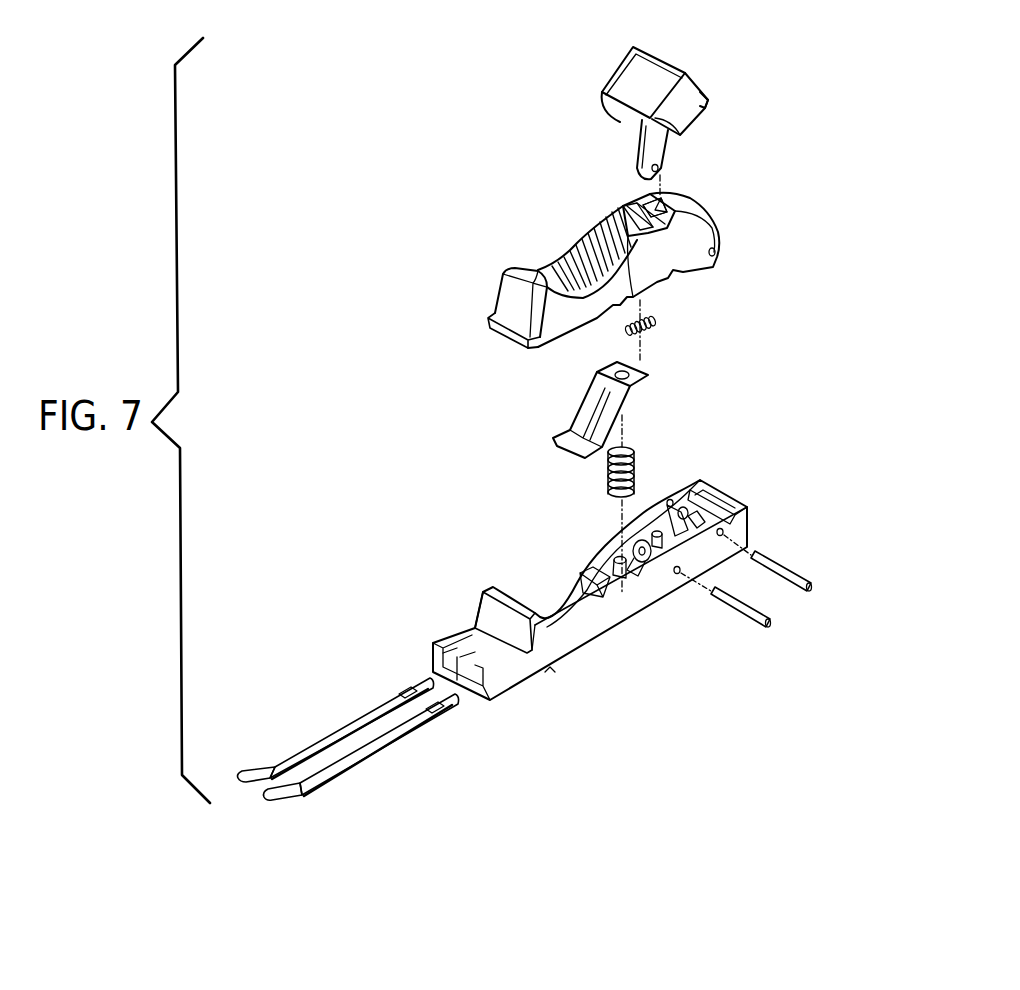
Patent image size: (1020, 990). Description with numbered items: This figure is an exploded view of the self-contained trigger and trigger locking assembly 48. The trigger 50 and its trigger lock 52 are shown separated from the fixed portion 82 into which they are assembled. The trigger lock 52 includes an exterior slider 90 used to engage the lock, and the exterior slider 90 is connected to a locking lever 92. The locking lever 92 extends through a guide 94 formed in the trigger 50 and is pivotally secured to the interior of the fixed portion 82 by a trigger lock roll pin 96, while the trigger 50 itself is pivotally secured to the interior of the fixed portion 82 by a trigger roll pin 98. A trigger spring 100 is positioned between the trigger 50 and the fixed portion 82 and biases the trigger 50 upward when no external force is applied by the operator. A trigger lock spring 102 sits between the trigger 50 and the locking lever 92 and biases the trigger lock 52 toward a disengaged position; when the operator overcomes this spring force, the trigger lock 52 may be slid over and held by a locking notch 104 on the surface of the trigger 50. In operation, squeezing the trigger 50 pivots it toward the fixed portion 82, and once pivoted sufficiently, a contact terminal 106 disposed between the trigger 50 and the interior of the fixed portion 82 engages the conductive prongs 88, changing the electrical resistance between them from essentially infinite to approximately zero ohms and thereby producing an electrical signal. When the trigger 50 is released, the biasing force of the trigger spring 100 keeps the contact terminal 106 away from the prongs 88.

The trigger and trigger locking assembly 48 is at (417, 479).
The trigger 50 is at (495, 290).
The trigger lock 52 is at (669, 55).
The fixed portion 82 is at (723, 487).
The conductive prongs 88 is at (375, 742).
The exterior slider 90 is at (705, 98).
The locking lever 92 is at (632, 162).
The guide 94 is at (651, 204).
The trigger lock roll pin 96 is at (752, 612).
The trigger roll pin 98 is at (786, 568).
The trigger spring 100 is at (605, 500).
The trigger lock spring 102 is at (657, 323).
The locking notch 104 is at (630, 212).
The contact terminal 106 is at (569, 422).